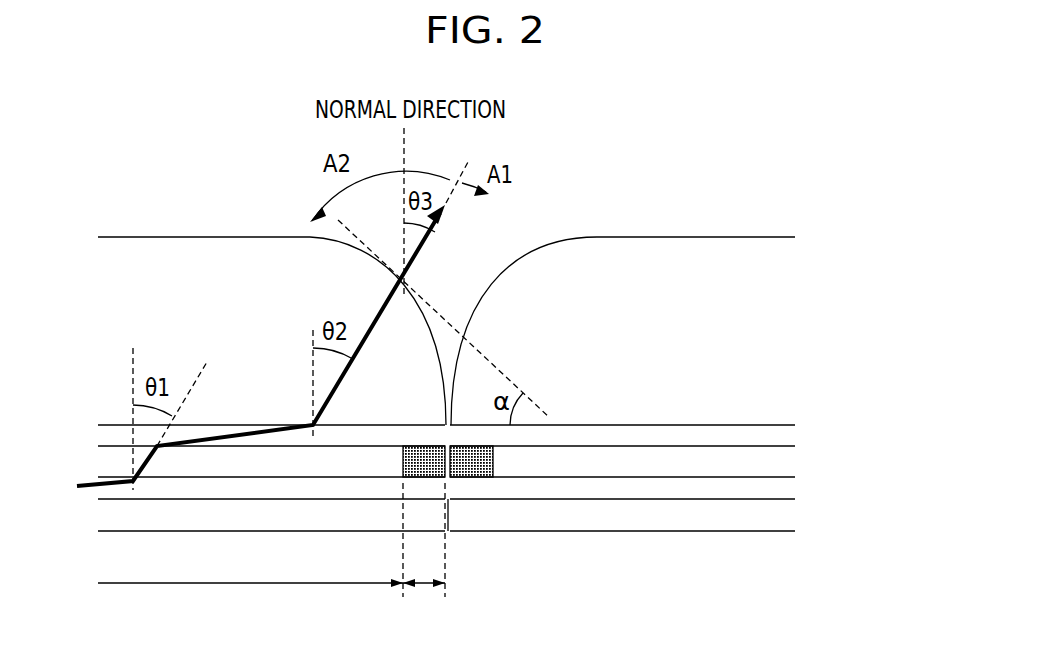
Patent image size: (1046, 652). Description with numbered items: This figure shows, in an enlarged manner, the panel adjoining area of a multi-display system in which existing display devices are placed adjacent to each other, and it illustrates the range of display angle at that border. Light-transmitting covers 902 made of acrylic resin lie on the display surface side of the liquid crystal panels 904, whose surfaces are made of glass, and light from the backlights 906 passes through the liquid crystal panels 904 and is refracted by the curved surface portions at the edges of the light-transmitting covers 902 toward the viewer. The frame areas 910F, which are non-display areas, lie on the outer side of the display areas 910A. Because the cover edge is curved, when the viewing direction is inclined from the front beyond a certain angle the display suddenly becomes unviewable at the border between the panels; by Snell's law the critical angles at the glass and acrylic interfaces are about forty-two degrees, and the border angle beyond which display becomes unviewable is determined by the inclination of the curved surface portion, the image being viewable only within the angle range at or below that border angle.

The light-transmitting cover 902 is at (785, 338).
The liquid crystal panel 904 is at (780, 468).
The backlight 906 is at (777, 518).
The display area 910A is at (250, 554).
The frame area 910F is at (424, 554).